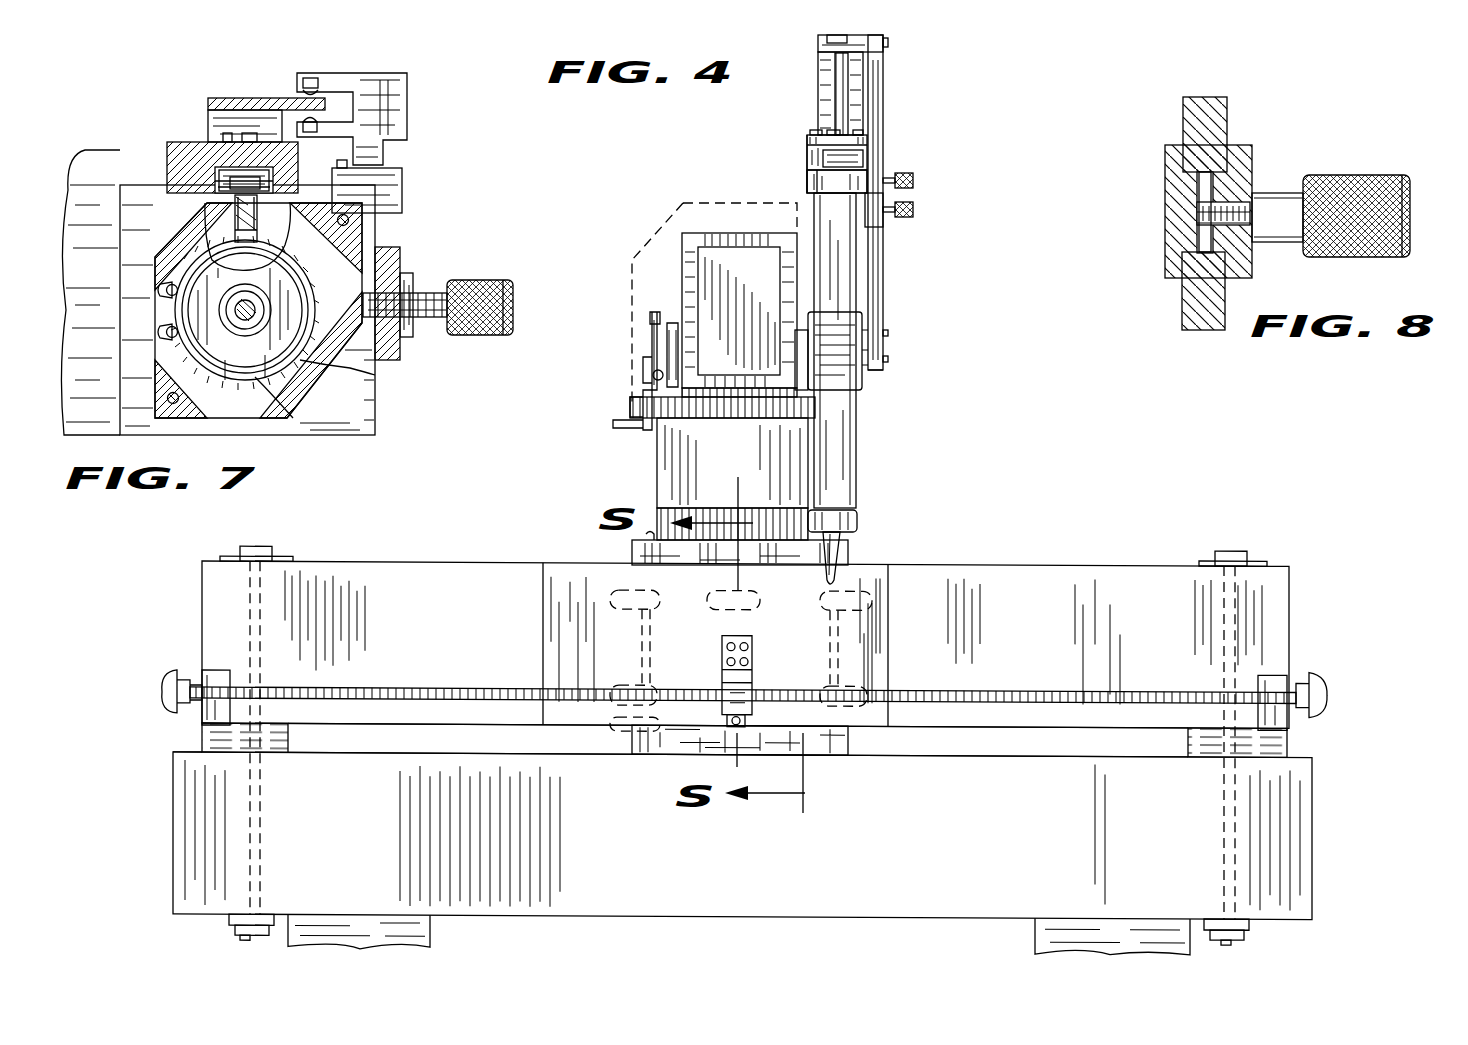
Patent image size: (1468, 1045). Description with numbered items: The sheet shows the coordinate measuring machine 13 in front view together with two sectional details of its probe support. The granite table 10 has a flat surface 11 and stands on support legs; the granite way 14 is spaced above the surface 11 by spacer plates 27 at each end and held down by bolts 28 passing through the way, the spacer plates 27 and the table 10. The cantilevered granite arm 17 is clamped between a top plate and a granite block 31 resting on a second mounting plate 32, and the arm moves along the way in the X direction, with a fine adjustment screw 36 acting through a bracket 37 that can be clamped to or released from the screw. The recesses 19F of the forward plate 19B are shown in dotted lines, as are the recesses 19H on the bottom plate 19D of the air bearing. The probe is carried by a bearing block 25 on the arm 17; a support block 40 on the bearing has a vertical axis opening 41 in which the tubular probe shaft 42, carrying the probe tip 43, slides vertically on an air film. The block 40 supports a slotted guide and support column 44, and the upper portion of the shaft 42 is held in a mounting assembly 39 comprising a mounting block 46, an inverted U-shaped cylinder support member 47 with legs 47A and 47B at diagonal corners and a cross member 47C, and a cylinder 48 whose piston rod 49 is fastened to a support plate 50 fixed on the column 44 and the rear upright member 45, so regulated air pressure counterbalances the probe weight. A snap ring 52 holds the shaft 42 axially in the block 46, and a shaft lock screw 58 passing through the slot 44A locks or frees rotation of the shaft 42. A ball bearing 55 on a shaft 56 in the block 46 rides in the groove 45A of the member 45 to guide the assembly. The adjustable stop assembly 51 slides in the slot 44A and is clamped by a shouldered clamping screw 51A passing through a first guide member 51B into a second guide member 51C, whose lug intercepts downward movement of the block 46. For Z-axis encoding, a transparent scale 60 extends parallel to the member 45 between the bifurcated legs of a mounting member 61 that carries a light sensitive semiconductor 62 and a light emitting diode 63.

In FIG. 4, the table 10 is at (200, 848).
In FIG. 4, the flat surface 11 is at (185, 752).
In FIG. 4, the coordinate measuring machine 13 is at (410, 928).
In FIG. 4, the way 14 is at (395, 585).
In FIG. 4, the cantilevered granite arm 17 is at (713, 257).
In FIG. 4, the forward plate 19B is at (888, 625).
In FIG. 4, the bottom plate 19D is at (823, 743).
In FIG. 4, the recesses 19F is at (632, 676).
In FIG. 4, the recesses 19H is at (678, 757).
In FIG. 4, the bearing block 25 is at (690, 280).
In FIG. 4, the spacer plate 27 is at (288, 737).
In FIG. 4, the bolt 28 is at (255, 547).
In FIG. 4, the granite block 31 is at (683, 468).
In FIG. 4, the second mounting plate 32 is at (650, 545).
In FIG. 4, the fine adjustment screw 36 is at (1085, 684).
In FIG. 4, the bracket 37 is at (722, 663).
In FIG. 4, the mounting assembly 39 is at (795, 170).
In FIG. 7, the support block 40 is at (360, 435).
In FIG. 4, the support block 40 is at (835, 375).
In FIG. 4, the vertical axis opening 41 is at (883, 316).
In FIG. 7, the probe shaft 42 is at (290, 398).
In FIG. 4, the probe shaft 42 is at (843, 458).
In FIG. 4, the probe tip 43 is at (830, 555).
In FIG. 7, the guide and support column 44 is at (388, 270).
In FIG. 8, the guide and support column 44 is at (1207, 97).
In FIG. 8, the slot 44A is at (1197, 183).
In FIG. 7, the upright member 45 is at (183, 140).
In FIG. 4, the upright member 45 is at (822, 80).
In FIG. 7, the groove 45A is at (263, 167).
In FIG. 7, the mounting block 46 is at (308, 370).
In FIG. 4, the mounting block 46 is at (817, 187).
In FIG. 4, the cylinder support member 47 is at (810, 145).
In FIG. 7, the leg 47A is at (195, 413).
In FIG. 4, the leg 47A is at (807, 163).
In FIG. 7, the leg 47B is at (350, 233).
In FIG. 4, the leg 47B is at (862, 170).
In FIG. 4, the cross member 47C is at (865, 138).
In FIG. 4, the cylinder 48 is at (860, 160).
In FIG. 4, the piston rod 49 is at (848, 82).
In FIG. 4, the support plate 50 is at (863, 50).
In FIG. 4, the adjustable stop assembly 51 is at (885, 215).
In FIG. 8, the shouldered clamping screw 51A is at (1275, 193).
In FIG. 8, the first guide member 51B is at (1252, 267).
In FIG. 8, the second guide member 51C is at (1167, 277).
In FIG. 7, the snap ring 52 is at (162, 332).
In FIG. 7, the ball bearing 55 is at (227, 183).
In FIG. 7, the shaft 56 is at (243, 207).
In FIG. 7, the shaft lock screw 58 is at (500, 328).
In FIG. 4, the shaft lock screw 58 is at (912, 182).
In FIG. 7, the transparent scale 60 is at (210, 98).
In FIG. 7, the mounting member 61 is at (407, 83).
In FIG. 7, the light sensitive semiconductor 62 is at (327, 90).
In FIG. 7, the light emitting diode 63 is at (318, 123).